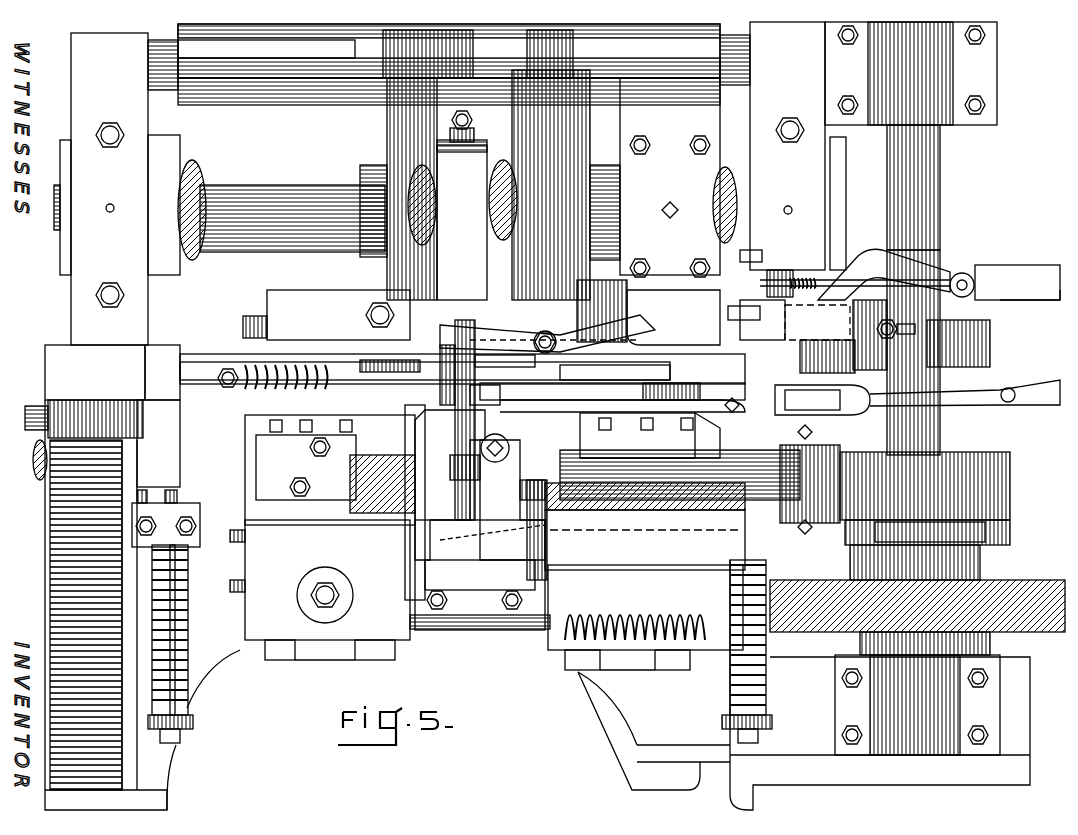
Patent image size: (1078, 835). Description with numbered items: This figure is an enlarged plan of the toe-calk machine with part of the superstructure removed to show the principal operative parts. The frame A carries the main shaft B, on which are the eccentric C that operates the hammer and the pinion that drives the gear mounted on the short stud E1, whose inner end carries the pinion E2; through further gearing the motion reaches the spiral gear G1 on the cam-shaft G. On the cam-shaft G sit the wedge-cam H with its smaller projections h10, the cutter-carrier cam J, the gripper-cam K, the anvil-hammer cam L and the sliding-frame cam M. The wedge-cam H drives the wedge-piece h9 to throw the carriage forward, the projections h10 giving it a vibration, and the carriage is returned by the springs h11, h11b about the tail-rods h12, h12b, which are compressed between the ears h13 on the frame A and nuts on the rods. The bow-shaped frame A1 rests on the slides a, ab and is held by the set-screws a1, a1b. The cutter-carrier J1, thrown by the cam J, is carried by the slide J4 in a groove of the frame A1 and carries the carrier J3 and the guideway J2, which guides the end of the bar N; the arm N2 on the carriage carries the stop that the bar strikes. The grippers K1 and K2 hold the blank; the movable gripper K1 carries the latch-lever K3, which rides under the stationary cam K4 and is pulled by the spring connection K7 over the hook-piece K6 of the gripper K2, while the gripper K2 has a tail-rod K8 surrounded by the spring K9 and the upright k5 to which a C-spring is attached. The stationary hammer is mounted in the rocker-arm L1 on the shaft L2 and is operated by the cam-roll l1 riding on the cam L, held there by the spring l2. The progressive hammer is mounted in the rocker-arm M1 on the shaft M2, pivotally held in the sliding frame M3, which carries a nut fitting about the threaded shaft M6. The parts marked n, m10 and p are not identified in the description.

The main shaft B is at (192, 172).
The threaded shaft M6 is at (305, 192).
The sliding-frame cam M is at (369, 211).
The shaft M2 is at (412, 189).
The eccentric C is at (462, 205).
The shaft L2 is at (551, 185).
The sliding frame M3 is at (678, 177).
The cam-roll l1 is at (925, 262).
The anvil-hammer cam L is at (1017, 271).
The spring l2 is at (1040, 300).
The gripper-cam K is at (958, 343).
The rocker-arm M1 is at (326, 315).
The spring connection K7 is at (270, 372).
The lever n is at (470, 330).
The pin m10 is at (462, 320).
The arm N2 is at (555, 343).
The rocker-arm L1 is at (668, 312).
The latch-lever K3 is at (615, 378).
The cam K4 is at (612, 383).
The hook-piece K6 is at (386, 353).
The gripper K2 is at (436, 374).
The gripper K1 is at (505, 361).
The pin p is at (485, 395).
The spring K9 is at (70, 410).
The pinion E2 is at (95, 397).
The tail-rod K8 is at (40, 422).
The short shaft or stud E1 is at (50, 560).
The ears h13 is at (202, 520).
The springs h11 is at (188, 640).
The tail-rods h12 is at (182, 740).
The frame A is at (330, 470).
The set-screws a1 is at (335, 610).
The slides a is at (326, 662).
The bar N is at (465, 565).
The slide J4 is at (450, 485).
The guideway or sluiceway J2 is at (442, 502).
The carrier J3 is at (527, 425).
The wedge-piece h9 is at (493, 525).
The cutter-carrier J1 is at (650, 435).
The cutter-carrier cam J is at (1010, 468).
The wedge-cam H is at (1010, 510).
The smaller projections h10 is at (950, 510).
The cam-shaft G is at (940, 428).
The upright k5 is at (820, 400).
The bow-shaped frame A1 is at (645, 526).
The set-screws a1b is at (625, 595).
The slides ab is at (643, 670).
The spiral gear G1 is at (917, 601).
The springs h11b is at (766, 685).
The tail-rods h12b is at (760, 735).